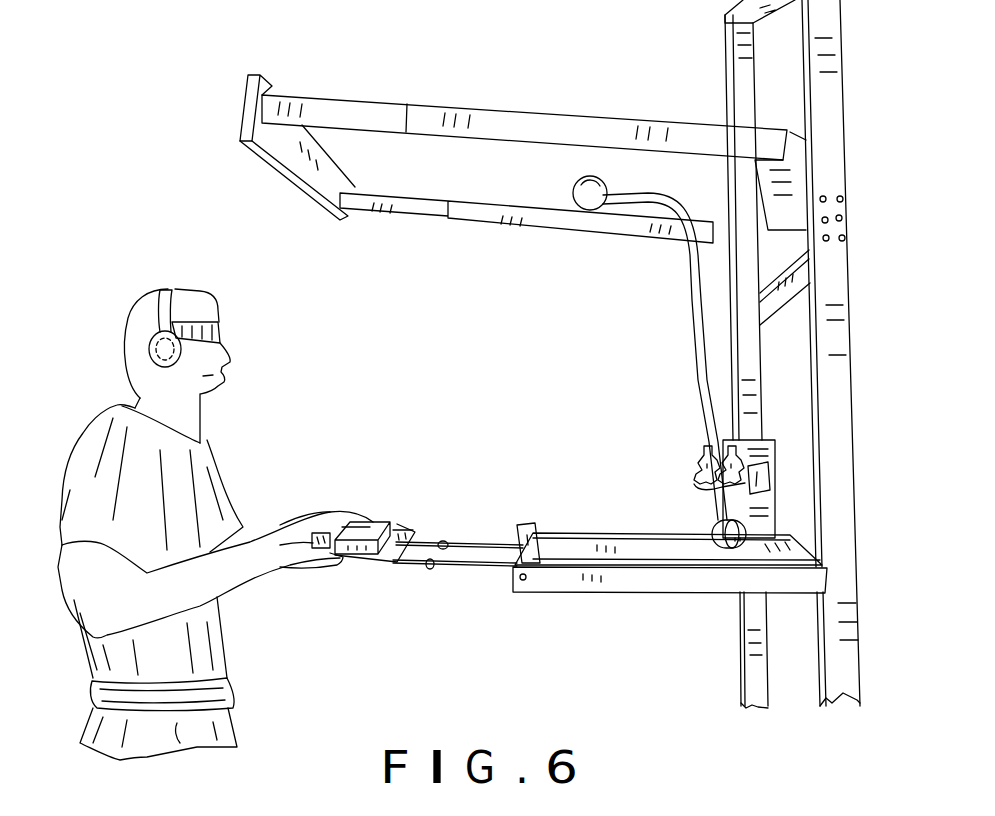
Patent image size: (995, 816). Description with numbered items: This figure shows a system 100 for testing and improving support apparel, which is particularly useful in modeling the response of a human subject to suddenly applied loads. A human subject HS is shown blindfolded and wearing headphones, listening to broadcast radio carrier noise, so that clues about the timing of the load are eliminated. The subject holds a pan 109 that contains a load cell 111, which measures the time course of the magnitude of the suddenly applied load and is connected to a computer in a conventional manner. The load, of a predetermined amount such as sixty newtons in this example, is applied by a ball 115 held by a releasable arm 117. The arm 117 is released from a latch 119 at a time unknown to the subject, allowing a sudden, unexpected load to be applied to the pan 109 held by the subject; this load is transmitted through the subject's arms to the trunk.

The system 100 is at (273, 253).
The human subject HS is at (97, 405).
The pan 109 is at (408, 532).
The load cell 111 is at (367, 527).
The ball 115 is at (573, 188).
The releasable arm 117 is at (707, 377).
The latch 119 is at (700, 471).